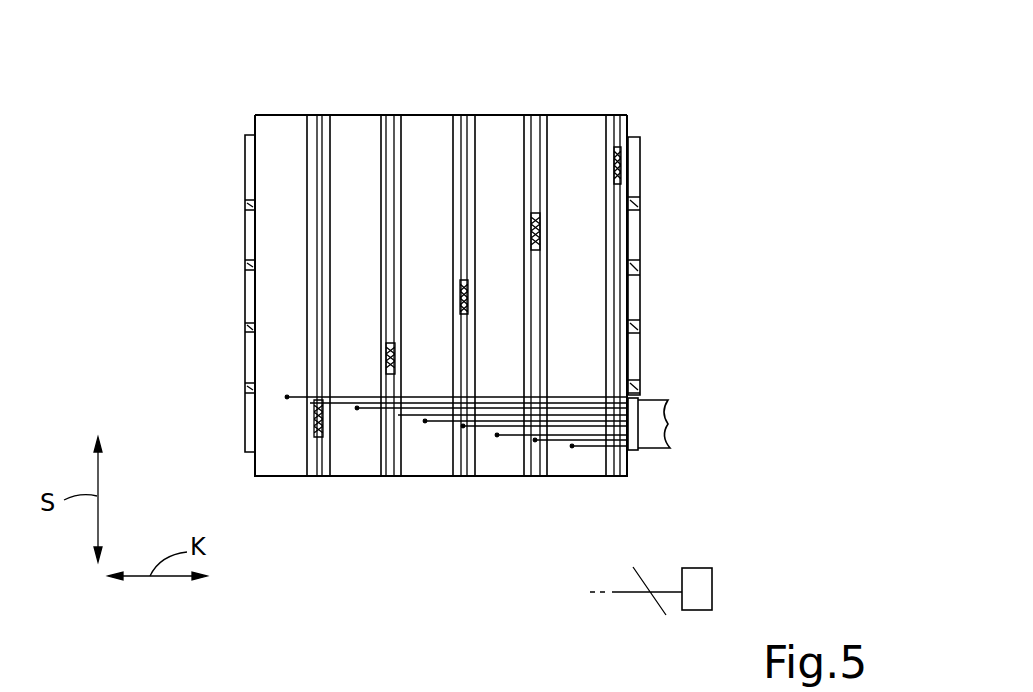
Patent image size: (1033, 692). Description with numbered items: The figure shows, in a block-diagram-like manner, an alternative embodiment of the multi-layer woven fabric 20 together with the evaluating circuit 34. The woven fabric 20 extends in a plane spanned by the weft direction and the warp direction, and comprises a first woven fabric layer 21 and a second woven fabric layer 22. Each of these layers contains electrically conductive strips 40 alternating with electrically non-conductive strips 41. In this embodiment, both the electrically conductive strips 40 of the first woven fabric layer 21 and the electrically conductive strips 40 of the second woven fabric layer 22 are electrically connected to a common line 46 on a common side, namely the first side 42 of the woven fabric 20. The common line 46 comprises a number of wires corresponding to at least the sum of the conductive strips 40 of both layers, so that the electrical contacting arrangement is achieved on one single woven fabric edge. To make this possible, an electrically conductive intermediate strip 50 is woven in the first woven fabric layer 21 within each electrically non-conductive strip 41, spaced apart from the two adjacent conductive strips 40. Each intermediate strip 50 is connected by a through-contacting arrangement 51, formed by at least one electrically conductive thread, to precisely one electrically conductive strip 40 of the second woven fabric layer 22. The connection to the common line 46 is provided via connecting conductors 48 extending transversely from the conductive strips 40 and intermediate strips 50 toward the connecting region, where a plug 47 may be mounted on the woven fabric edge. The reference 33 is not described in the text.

The woven fabric 20 is at (679, 276).
The first woven fabric layer 21 is at (275, 115).
The second woven fabric layer 22 is at (637, 300).
The sensor arrangement 33 is at (220, 119).
The evaluating circuit 34 is at (700, 595).
The electrically conductive strip 40 is at (427, 140).
The electrically non-conductive strip 41 is at (378, 140).
The first side 42 is at (640, 468).
The common line 46 is at (668, 418).
The plug 47 is at (640, 397).
The connecting conductor 48 is at (425, 422).
The electrically conductive intermediate strip 50 is at (317, 125).
The through-contacting arrangement 51 is at (623, 165).